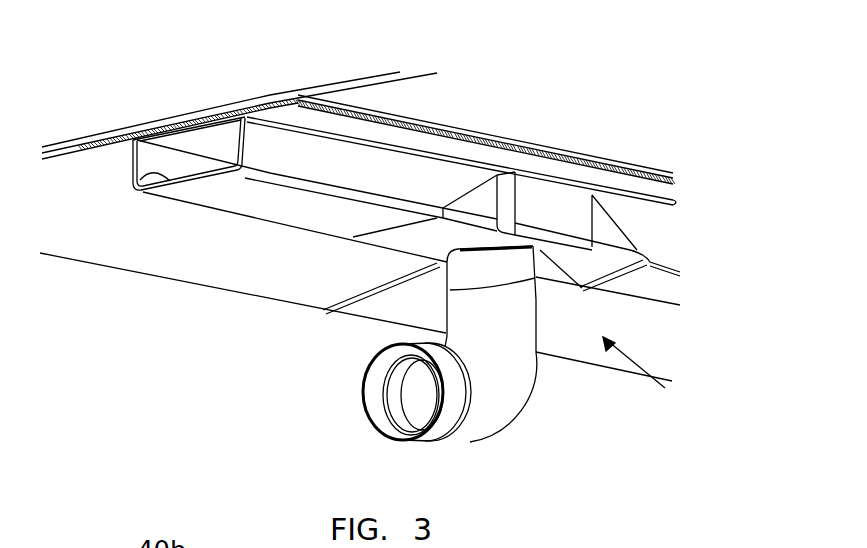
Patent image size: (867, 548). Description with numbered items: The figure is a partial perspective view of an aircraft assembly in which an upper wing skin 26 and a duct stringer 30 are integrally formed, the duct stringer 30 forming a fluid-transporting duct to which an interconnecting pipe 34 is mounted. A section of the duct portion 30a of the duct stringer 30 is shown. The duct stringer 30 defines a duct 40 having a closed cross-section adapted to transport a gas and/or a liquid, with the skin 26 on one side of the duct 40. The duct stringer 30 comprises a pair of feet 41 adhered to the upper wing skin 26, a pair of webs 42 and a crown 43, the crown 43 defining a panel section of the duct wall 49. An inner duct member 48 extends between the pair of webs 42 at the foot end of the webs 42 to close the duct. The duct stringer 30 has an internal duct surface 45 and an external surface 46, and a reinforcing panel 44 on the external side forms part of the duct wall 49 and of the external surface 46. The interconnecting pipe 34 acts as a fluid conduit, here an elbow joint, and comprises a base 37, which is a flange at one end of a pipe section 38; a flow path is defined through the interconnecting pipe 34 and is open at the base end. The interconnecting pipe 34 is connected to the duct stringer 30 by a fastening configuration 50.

The upper wing skin 26 is at (438, 98).
The duct stringer 30 is at (265, 140).
The duct portion 30a is at (207, 193).
The interconnecting pipe 34 is at (497, 400).
The base 37 is at (547, 262).
The pipe section 38 is at (467, 430).
The duct 40 is at (182, 137).
The pair of feet 41 is at (327, 117).
The pair of webs 42 is at (665, 228).
The crown 43 is at (663, 287).
The reinforcing panel 44 is at (528, 262).
The internal duct surface 45 is at (137, 183).
The external surface 46 is at (272, 210).
The inner duct member 48 is at (152, 128).
The duct wall 49 is at (320, 217).
The fastening configuration 50 is at (639, 386).